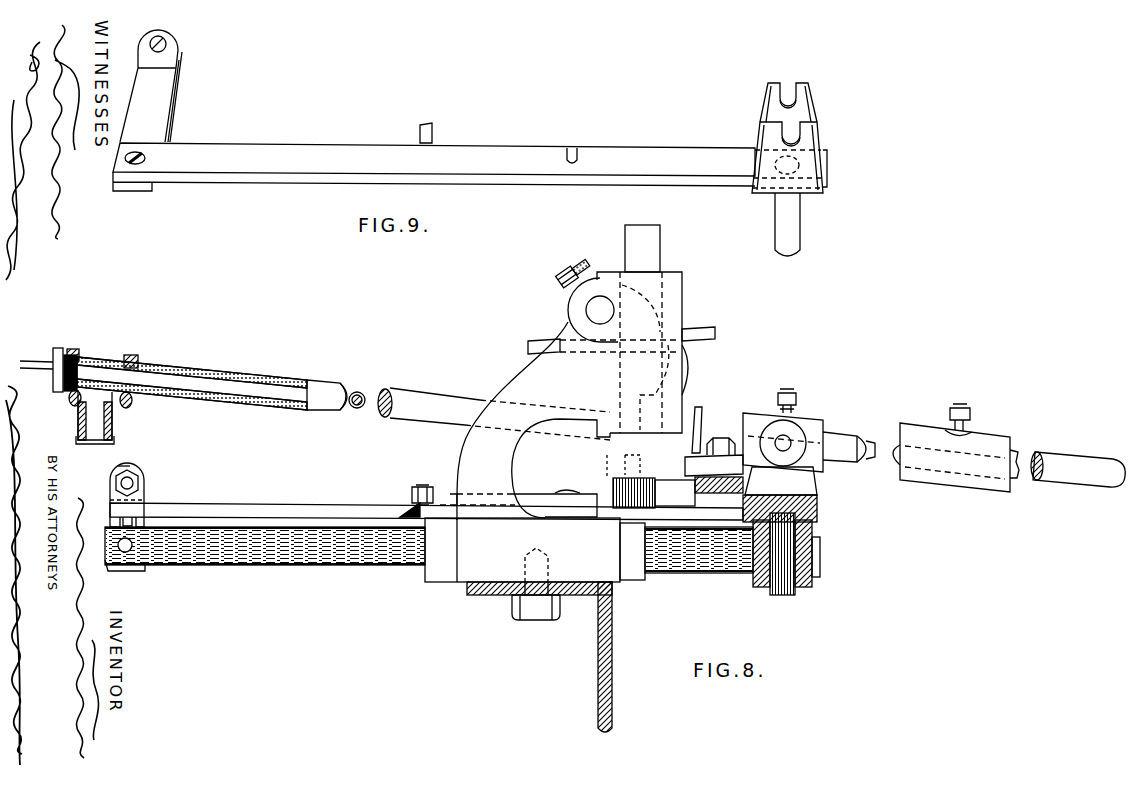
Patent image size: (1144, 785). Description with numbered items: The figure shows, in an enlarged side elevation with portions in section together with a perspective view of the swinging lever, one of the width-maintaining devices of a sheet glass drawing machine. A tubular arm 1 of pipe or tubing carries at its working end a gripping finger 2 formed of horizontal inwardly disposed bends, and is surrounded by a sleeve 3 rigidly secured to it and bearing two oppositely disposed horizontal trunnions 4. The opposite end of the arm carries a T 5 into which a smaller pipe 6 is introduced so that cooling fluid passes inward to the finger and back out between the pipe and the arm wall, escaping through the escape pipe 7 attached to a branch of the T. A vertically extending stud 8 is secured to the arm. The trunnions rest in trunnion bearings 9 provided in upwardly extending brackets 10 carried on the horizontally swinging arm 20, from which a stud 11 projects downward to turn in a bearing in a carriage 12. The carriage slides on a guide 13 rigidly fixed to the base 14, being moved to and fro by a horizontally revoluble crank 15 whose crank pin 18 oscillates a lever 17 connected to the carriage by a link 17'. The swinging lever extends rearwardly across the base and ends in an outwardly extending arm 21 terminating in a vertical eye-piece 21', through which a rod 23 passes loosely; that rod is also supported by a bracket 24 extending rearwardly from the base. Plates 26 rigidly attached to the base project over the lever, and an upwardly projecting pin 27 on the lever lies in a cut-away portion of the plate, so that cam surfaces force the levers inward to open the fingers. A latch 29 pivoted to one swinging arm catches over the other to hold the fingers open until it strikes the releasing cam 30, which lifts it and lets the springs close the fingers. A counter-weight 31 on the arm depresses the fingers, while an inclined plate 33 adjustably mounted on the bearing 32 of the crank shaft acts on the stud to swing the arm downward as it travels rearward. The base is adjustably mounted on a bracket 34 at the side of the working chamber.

In FIG. 8, the tubular arm 1 is at (456, 396).
In FIG. 8, the gripping finger 2 is at (1078, 450).
In FIG. 8, the sleeve 3 is at (818, 418).
In FIG. 8, the trunnion 4 is at (772, 416).
In FIG. 8, the T 5 is at (124, 355).
In FIG. 8, the pipe 6 is at (362, 392).
In FIG. 8, the escape pipe 7 is at (76, 423).
In FIG. 8, the stud 8 is at (692, 362).
In FIG. 9, the trunnion bearing 9 is at (790, 88).
In FIG. 9, the bracket 10 is at (752, 135).
In FIG. 8, the bracket 10 is at (806, 494).
In FIG. 9, the stud 11 is at (816, 224).
In FIG. 8, the stud 11 is at (810, 618).
In FIG. 8, the carriage 12 is at (818, 580).
In FIG. 8, the guide 13 is at (685, 575).
In FIG. 8, the base 14 is at (440, 590).
In FIG. 8, the crank 15 is at (742, 425).
In FIG. 8, the lever 17 is at (654, 479).
In FIG. 8, the link 17' is at (756, 563).
In FIG. 8, the crank pin 18 is at (726, 456).
In FIG. 9, the swinging arm 20 is at (285, 143).
In FIG. 8, the swinging arm 20 is at (355, 510).
In FIG. 9, the arm 21 is at (177, 86).
In FIG. 8, the arm 21 is at (106, 497).
In FIG. 9, the eye-piece 21' is at (195, 40).
In FIG. 8, the eye-piece 21' is at (151, 449).
In FIG. 8, the rod 23 is at (138, 478).
In FIG. 8, the bracket 24 is at (320, 560).
In FIG. 8, the plate 26 is at (550, 494).
In FIG. 9, the pin 27 is at (574, 146).
In FIG. 8, the latch 29 is at (422, 485).
In FIG. 8, the releasing cam 30 is at (400, 504).
In FIG. 8, the counter-weight 31 is at (995, 430).
In FIG. 8, the bearing 32 is at (537, 388).
In FIG. 8, the plate 33 is at (705, 325).
In FIG. 8, the bracket 34 is at (598, 678).